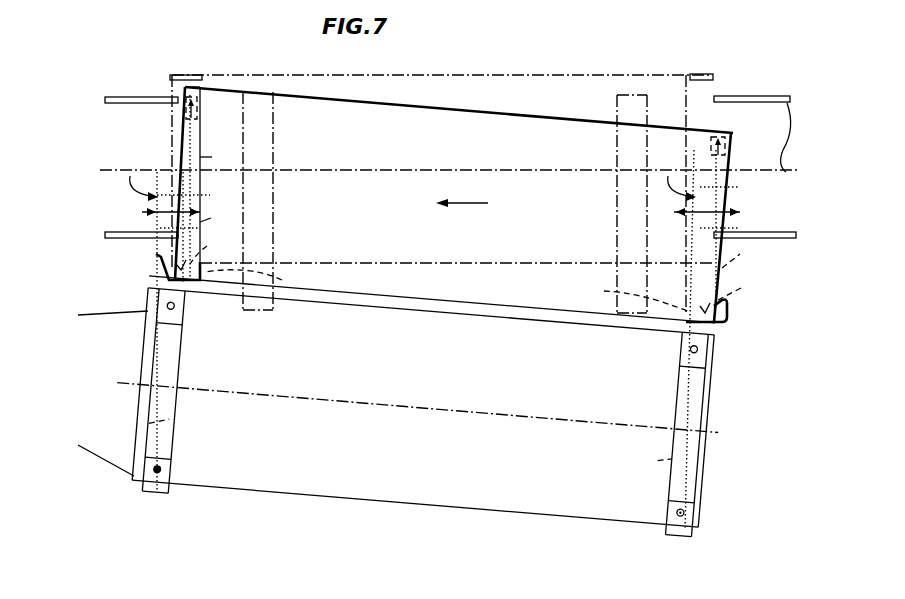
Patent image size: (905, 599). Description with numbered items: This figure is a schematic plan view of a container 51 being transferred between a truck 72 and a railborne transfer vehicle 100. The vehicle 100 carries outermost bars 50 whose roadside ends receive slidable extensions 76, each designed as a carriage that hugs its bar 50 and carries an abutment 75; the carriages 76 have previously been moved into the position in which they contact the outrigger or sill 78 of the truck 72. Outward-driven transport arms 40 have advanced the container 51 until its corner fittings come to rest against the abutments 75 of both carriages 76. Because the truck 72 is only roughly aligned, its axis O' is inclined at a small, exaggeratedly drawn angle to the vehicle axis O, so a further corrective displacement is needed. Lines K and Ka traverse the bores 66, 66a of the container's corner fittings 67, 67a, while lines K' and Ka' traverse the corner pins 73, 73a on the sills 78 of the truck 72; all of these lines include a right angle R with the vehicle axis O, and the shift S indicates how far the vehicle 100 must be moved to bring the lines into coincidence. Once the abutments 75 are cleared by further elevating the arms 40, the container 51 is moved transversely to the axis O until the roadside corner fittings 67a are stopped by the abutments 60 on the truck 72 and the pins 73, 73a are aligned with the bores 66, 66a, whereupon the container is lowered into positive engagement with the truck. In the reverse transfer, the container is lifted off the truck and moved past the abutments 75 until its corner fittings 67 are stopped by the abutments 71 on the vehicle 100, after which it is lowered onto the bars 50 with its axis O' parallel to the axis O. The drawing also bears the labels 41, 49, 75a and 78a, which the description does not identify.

The transfer vehicle 100 is at (440, 75).
The container 51 is at (516, 114).
The vehicle axis O is at (448, 183).
The left carrier 41 is at (268, 148).
The transport arms 40 is at (617, 147).
The abutments 71 is at (178, 76).
The bores 66 is at (214, 78).
The corner fittings 67 is at (206, 112).
The outermost bars 50 is at (171, 128).
The rod support 49 is at (789, 231).
The line K is at (478, 173).
The line Ka is at (459, 287).
The right angle R is at (399, 197).
The required shift S is at (142, 214).
The slidable extension 76 is at (483, 236).
The bores 66a is at (486, 269).
The roadside corner fittings 67a is at (447, 291).
The line K' is at (401, 340).
The left hook 75a is at (186, 284).
The abutments 75 is at (722, 330).
The truck 72 is at (252, 460).
The left post 78a is at (172, 364).
The sill 78 is at (682, 356).
The corner pin 73 is at (179, 304).
The corner pin 73a is at (180, 466).
The abutments 60 is at (163, 492).
The truck axis O' is at (417, 407).
The line Ka' is at (413, 429).